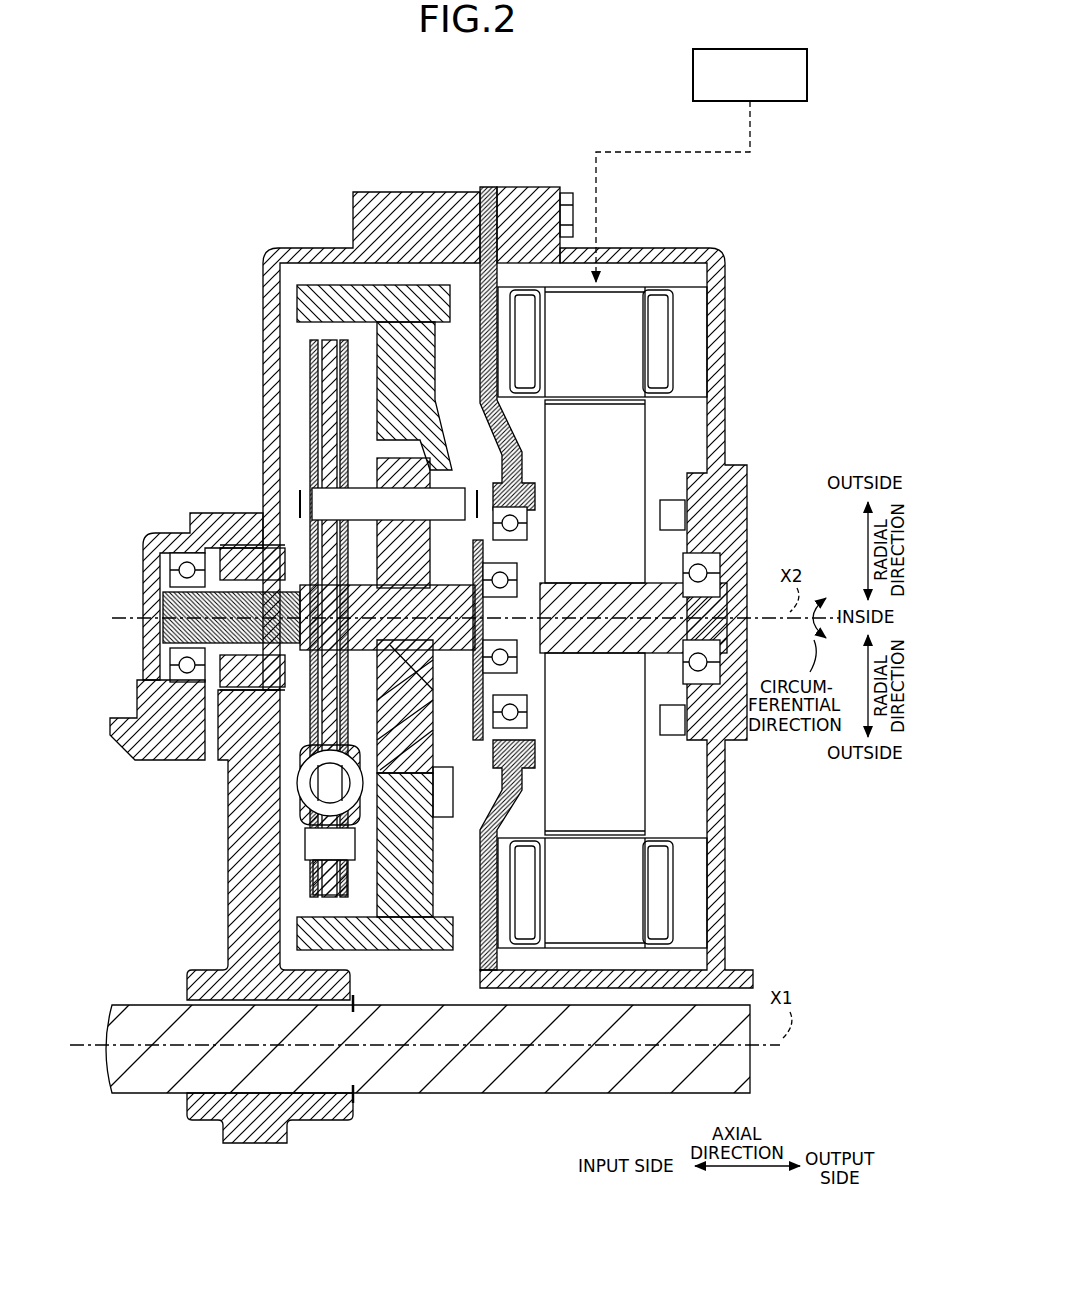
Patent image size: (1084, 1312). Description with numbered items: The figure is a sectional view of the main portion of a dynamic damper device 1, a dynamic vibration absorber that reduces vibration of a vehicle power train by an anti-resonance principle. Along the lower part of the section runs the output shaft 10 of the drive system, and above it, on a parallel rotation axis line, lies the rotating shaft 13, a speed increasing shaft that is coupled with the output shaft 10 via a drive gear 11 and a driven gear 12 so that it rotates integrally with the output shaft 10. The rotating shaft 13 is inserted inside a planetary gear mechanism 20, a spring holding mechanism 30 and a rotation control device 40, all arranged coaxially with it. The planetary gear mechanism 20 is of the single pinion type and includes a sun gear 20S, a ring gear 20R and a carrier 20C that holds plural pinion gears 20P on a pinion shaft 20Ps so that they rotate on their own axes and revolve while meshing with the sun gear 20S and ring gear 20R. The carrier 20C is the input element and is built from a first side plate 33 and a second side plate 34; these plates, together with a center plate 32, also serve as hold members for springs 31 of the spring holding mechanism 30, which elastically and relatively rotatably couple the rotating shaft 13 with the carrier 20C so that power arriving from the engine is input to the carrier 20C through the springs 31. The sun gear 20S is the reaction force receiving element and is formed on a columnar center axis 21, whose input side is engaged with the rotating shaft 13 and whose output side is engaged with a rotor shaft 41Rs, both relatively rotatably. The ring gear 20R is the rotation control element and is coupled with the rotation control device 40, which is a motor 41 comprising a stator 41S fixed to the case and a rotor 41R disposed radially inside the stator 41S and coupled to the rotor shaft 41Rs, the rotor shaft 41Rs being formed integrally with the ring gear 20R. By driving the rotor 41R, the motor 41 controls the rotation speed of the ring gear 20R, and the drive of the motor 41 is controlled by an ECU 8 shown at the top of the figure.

The dynamic damper device 1 is at (325, 106).
The ECU 8 is at (809, 70).
The output shaft 10 is at (140, 1001).
The drive gear 11 is at (228, 912).
The driven gear 12 is at (253, 540).
The rotating shaft 13 is at (163, 620).
The planetary gear mechanism 20 is at (333, 246).
The ring gear 20R is at (310, 282).
The carrier 20C is at (243, 618).
The first side plate 33 is at (312, 355).
The second side plate 34 is at (312, 382).
The pinion gear 20P is at (403, 455).
The sun gear 20S is at (403, 545).
The pinion shaft 20Ps is at (357, 500).
The center axis 21 is at (200, 697).
The spring holding mechanism 30 is at (253, 820).
The spring 31 is at (308, 783).
The center plate 32 is at (300, 760).
The rotation control device 40 is at (724, 240).
The motor 41 is at (653, 571).
The stator 41S is at (620, 345).
The rotor 41R is at (620, 441).
The rotor shaft 41Rs is at (660, 585).